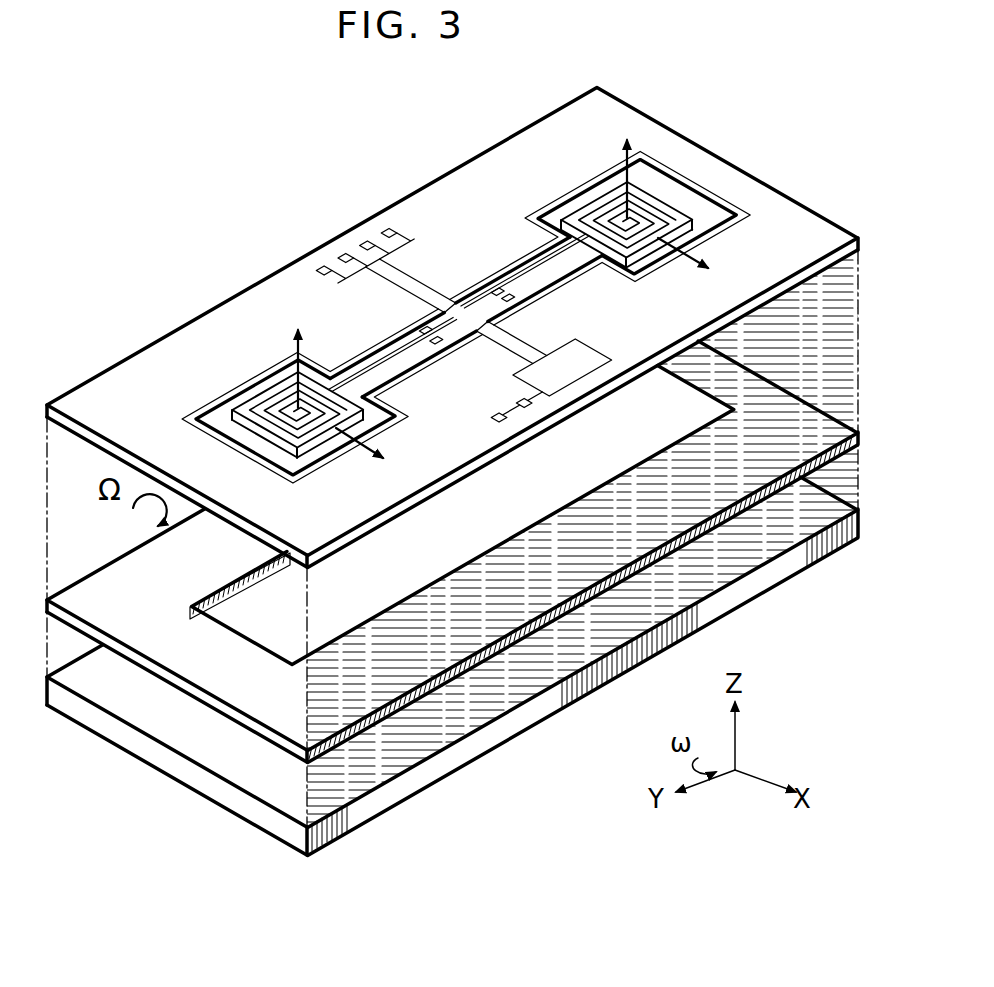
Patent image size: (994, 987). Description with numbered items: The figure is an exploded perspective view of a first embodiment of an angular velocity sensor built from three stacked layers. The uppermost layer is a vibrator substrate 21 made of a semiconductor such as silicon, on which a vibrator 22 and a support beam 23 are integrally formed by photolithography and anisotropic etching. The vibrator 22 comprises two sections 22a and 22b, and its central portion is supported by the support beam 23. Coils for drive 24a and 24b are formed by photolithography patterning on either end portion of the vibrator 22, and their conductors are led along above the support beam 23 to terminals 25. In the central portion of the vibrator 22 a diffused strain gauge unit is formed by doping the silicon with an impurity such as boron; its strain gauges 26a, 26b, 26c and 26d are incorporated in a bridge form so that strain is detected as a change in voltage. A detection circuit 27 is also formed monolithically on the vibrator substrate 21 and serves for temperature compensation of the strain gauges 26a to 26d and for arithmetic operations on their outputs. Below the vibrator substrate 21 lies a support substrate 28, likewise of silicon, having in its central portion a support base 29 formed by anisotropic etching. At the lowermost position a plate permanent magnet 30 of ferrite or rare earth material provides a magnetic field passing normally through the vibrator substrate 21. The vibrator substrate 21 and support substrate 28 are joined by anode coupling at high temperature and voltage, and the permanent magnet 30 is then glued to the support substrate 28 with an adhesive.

The vibrator substrate 21 is at (790, 207).
The vibrator 22 is at (575, 262).
The section of the vibrator 22a is at (716, 216).
The section of the vibrator 22b is at (250, 415).
The support beam 23 is at (392, 318).
The coil for drive 24a is at (637, 222).
The coil for drive 24b is at (293, 410).
The terminals 25 is at (333, 224).
The strain gauge 26a is at (498, 288).
The strain gauge 26b is at (513, 294).
The strain gauge 26c is at (428, 326).
The strain gauge 26d is at (437, 344).
The detection circuit 27 is at (585, 352).
The support substrate 28 is at (782, 400).
The support base 29 is at (447, 518).
The plate permanent magnet 30 is at (808, 520).